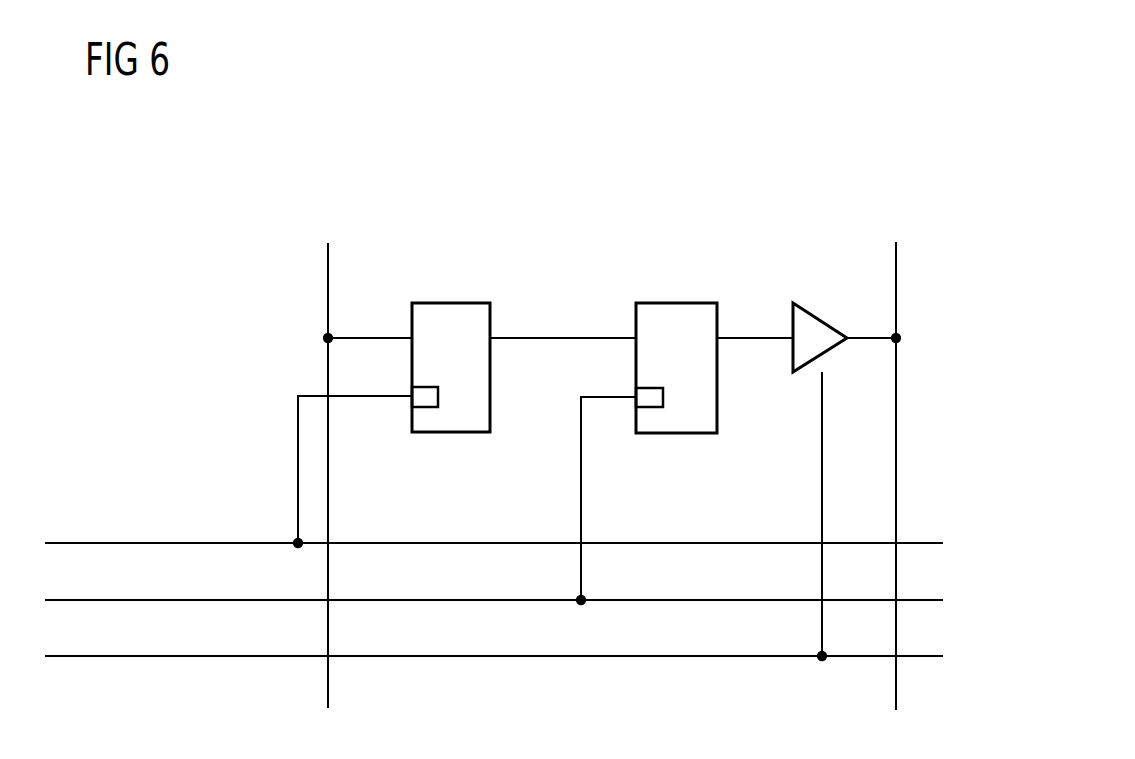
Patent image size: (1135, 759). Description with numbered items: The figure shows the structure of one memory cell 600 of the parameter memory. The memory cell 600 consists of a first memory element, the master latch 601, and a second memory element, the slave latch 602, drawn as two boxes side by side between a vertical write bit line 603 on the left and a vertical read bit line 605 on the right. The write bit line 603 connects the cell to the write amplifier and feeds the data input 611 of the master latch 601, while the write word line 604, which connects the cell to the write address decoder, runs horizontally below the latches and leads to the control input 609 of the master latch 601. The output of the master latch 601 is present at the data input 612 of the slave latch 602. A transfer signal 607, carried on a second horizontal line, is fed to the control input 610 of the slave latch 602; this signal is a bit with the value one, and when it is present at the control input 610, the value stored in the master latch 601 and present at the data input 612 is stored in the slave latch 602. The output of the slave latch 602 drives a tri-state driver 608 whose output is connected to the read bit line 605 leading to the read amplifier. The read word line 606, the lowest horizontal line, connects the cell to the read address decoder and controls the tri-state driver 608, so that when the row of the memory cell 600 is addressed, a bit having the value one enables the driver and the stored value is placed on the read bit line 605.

The memory cell 600 is at (833, 117).
The first memory element (master latch) 601 is at (450, 303).
The second memory element (slave latch) 602 is at (679, 303).
The write bit line 603 is at (320, 200).
The write word line 604 is at (95, 510).
The read bit line 605 is at (877, 195).
The read word line 606 is at (233, 640).
The transfer signal 607 is at (195, 580).
The tri-state driver 608 is at (822, 318).
The control input 609 is at (412, 393).
The control input 610 is at (636, 395).
The data input 611 is at (411, 335).
The data input 612 is at (636, 335).